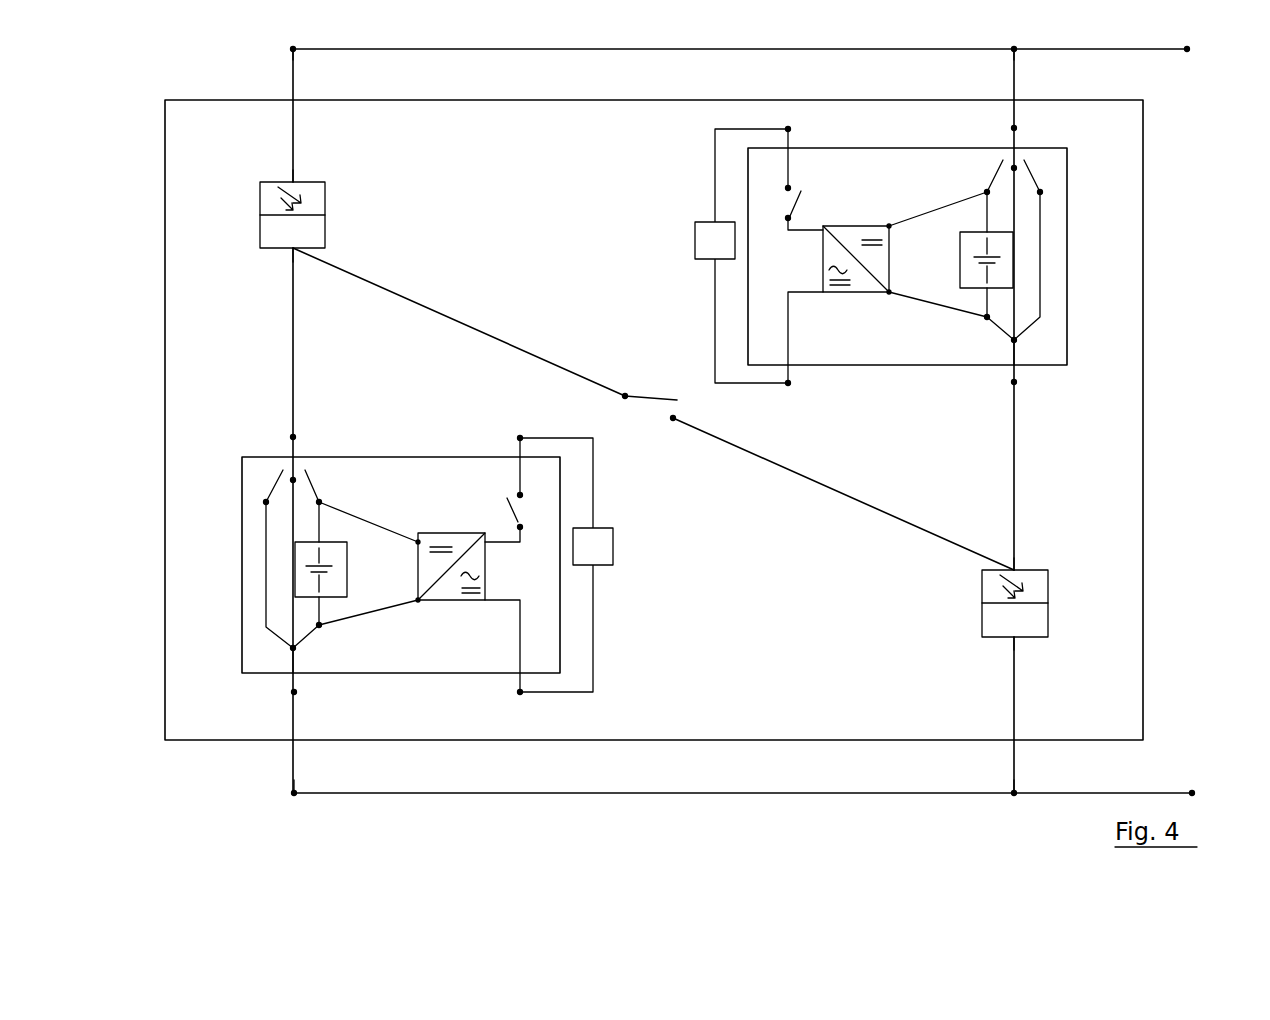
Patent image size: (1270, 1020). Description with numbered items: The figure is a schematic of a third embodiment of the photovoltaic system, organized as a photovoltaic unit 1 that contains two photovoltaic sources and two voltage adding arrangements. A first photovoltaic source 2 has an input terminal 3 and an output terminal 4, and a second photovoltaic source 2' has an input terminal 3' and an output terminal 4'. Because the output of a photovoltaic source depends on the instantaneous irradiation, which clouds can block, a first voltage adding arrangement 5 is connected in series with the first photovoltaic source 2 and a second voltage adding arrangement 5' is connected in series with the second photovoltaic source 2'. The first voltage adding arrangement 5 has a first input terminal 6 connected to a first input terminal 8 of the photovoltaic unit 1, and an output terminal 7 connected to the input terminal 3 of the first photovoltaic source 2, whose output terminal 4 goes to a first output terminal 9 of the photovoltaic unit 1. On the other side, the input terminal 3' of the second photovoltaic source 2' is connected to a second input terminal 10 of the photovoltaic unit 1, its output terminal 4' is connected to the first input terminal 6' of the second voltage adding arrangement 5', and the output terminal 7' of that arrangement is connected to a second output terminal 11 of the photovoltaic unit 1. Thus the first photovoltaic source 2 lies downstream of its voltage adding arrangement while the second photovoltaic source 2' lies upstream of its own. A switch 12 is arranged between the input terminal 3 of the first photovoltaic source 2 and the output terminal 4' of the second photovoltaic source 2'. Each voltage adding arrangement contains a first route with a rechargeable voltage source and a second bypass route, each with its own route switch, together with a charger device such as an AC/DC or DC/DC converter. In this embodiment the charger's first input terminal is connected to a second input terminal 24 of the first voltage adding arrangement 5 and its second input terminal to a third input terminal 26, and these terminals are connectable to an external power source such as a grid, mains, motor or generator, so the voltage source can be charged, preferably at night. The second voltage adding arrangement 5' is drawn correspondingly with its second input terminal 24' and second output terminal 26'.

The photovoltaic unit 1 is at (203, 118).
The first photovoltaic source 2 is at (323, 215).
The second photovoltaic source 2' is at (984, 603).
The input terminal of the first photovoltaic source 3 is at (263, 273).
The input terminal of the second photovoltaic source 3' is at (988, 666).
The output terminal of the first photovoltaic source 4 is at (319, 157).
The output terminal of the second photovoltaic source 4' is at (1047, 542).
The first voltage adding arrangement 5 is at (429, 565).
The second voltage adding arrangement 5' is at (873, 256).
The first input terminal of the first voltage adding arrangement 6 is at (321, 708).
The first input terminal of the second voltage adding arrangement 6' is at (986, 403).
The output terminal of the first voltage adding arrangement 7 is at (322, 410).
The output terminal of the second voltage adding arrangement 7' is at (986, 120).
The first input terminal of the photovoltaic unit 8 is at (294, 793).
The first output terminal of the photovoltaic unit 9 is at (293, 49).
The second input terminal of the photovoltaic unit 10 is at (1014, 793).
The second output terminal of the photovoltaic unit 11 is at (1014, 49).
The switch 12 is at (650, 402).
The second input terminal of the first voltage adding arrangement 24 is at (489, 712).
The second input terminal of the second voltage adding arrangement 24' is at (815, 405).
The third input terminal of the first voltage adding arrangement 26 is at (535, 546).
The second output terminal of the second voltage adding arrangement 26' is at (787, 245).